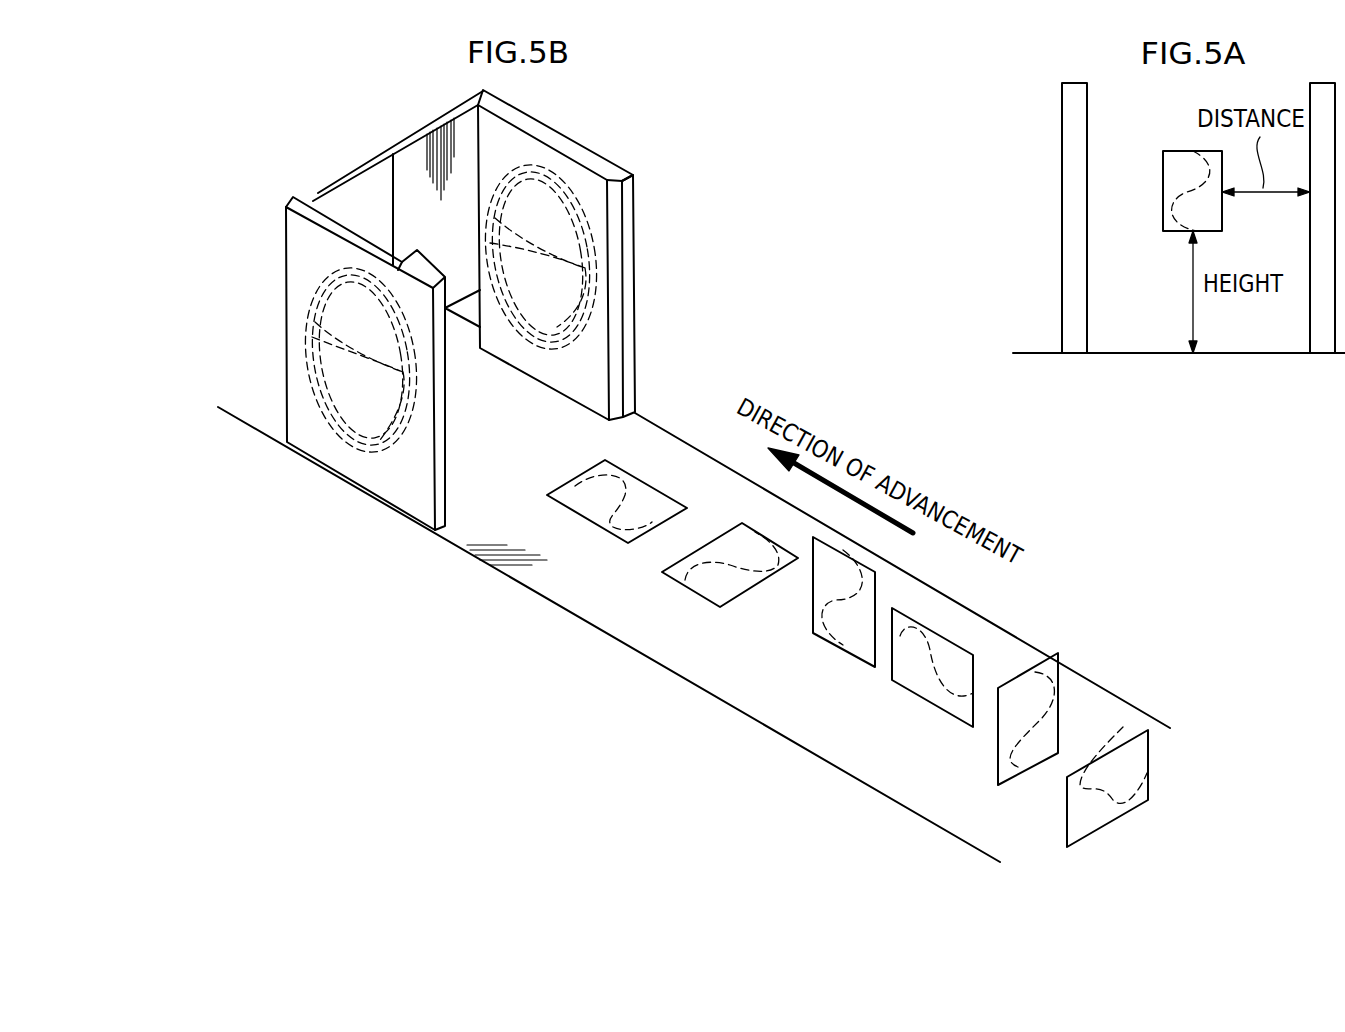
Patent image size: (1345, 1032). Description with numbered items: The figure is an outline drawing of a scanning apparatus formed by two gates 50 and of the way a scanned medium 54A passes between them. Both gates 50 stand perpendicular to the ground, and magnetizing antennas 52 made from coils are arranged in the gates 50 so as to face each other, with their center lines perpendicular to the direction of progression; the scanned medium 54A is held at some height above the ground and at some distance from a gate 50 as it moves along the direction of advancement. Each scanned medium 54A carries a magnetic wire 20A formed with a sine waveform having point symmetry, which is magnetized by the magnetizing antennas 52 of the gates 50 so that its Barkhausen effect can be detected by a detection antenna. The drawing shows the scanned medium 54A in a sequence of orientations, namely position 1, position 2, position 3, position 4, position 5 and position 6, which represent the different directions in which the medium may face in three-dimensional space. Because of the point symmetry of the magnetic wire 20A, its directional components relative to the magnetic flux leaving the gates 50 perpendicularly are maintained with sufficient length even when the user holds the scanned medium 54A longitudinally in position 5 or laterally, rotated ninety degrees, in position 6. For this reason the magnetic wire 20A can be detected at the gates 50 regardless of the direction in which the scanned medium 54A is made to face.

In FIG. 5B, the gate 50 is at (332, 222).
In FIG. 5A, the gate 50 is at (1073, 83).
In FIG. 5B, the magnetizing antenna 52 is at (395, 452).
In FIG. 5B, the scanned medium 54A is at (889, 620).
In FIG. 5A, the scanned medium 54A is at (1163, 186).
In FIG. 5B, the magnetic wire 20A is at (647, 479).
In FIG. 5B, the position 1 is at (643, 470).
In FIG. 5B, the position 2 is at (737, 520).
In FIG. 5B, the position 3 is at (880, 597).
In FIG. 5B, the position 4 is at (968, 645).
In FIG. 5B, the position 5 is at (1068, 707).
In FIG. 5B, the position 6 is at (1152, 773).